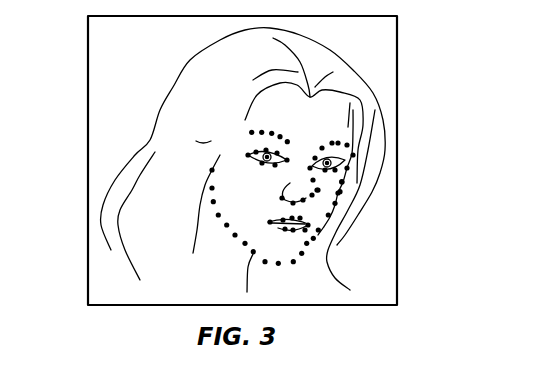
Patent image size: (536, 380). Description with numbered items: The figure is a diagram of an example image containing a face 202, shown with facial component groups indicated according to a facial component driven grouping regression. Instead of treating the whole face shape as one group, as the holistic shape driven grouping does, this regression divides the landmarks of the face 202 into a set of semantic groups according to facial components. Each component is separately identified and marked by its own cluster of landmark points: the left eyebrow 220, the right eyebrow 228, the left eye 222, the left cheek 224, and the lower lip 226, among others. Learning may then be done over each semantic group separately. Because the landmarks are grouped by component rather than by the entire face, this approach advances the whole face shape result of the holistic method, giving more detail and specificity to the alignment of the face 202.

The face 202 is at (213, 272).
The left eyebrow 220 is at (338, 143).
The left eye 222 is at (343, 170).
The left cheek 224 is at (325, 215).
The lower lip 226 is at (293, 230).
The right eyebrow 228 is at (262, 132).